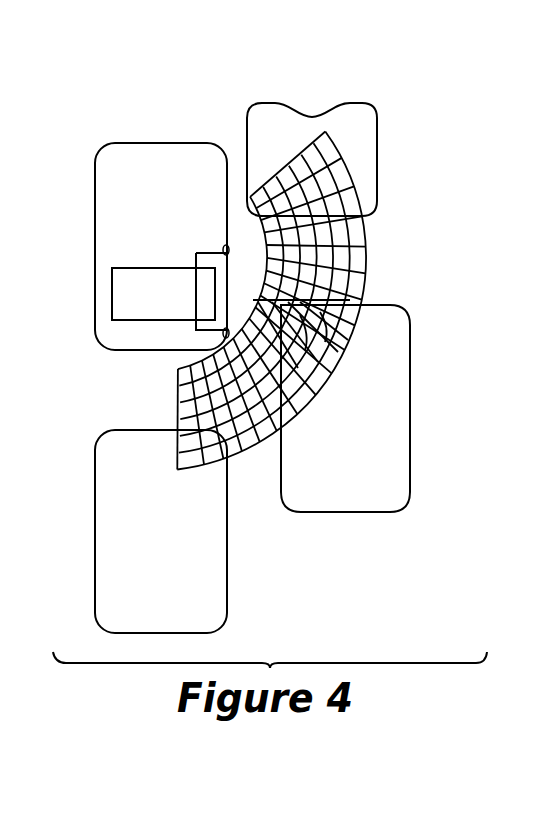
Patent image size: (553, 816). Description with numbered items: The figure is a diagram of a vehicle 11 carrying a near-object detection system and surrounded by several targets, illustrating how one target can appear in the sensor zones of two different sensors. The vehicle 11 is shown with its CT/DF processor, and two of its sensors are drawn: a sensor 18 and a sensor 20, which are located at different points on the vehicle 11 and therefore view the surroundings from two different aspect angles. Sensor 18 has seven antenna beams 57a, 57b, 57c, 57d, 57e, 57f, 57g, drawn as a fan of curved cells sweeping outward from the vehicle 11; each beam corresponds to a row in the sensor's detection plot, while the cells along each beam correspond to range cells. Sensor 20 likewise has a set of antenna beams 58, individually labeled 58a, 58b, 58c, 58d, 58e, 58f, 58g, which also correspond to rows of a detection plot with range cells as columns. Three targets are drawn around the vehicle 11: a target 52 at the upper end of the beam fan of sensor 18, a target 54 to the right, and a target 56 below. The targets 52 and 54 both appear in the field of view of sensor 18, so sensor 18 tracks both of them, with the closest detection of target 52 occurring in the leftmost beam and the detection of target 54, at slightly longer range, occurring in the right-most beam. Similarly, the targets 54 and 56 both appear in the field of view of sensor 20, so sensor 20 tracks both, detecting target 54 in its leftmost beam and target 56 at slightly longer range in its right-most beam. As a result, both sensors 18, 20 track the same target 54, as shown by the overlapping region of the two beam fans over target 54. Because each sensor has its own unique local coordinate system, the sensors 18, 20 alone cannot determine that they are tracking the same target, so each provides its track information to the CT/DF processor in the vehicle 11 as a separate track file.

The vehicle 11 is at (170, 218).
The sensor 18 is at (225, 248).
The sensor 20 is at (222, 337).
The target 52 is at (377, 108).
The target 54 is at (411, 495).
The target 56 is at (228, 617).
The antenna beams 58 is at (120, 409).
The antenna beam 57a is at (330, 147).
The antenna beam 57b is at (335, 175).
The antenna beam 57c is at (365, 218).
The antenna beam 57d is at (365, 253).
The antenna beam 57e is at (367, 290).
The antenna beam 57f is at (340, 328).
The antenna beam 57g is at (338, 363).
The antenna beam 58a is at (335, 320).
The antenna beam 58b is at (335, 358).
The antenna beam 58c is at (317, 393).
The antenna beam 58d is at (285, 427).
The antenna beam 58e is at (265, 437).
The antenna beam 58f is at (228, 453).
The antenna beam 58g is at (197, 468).